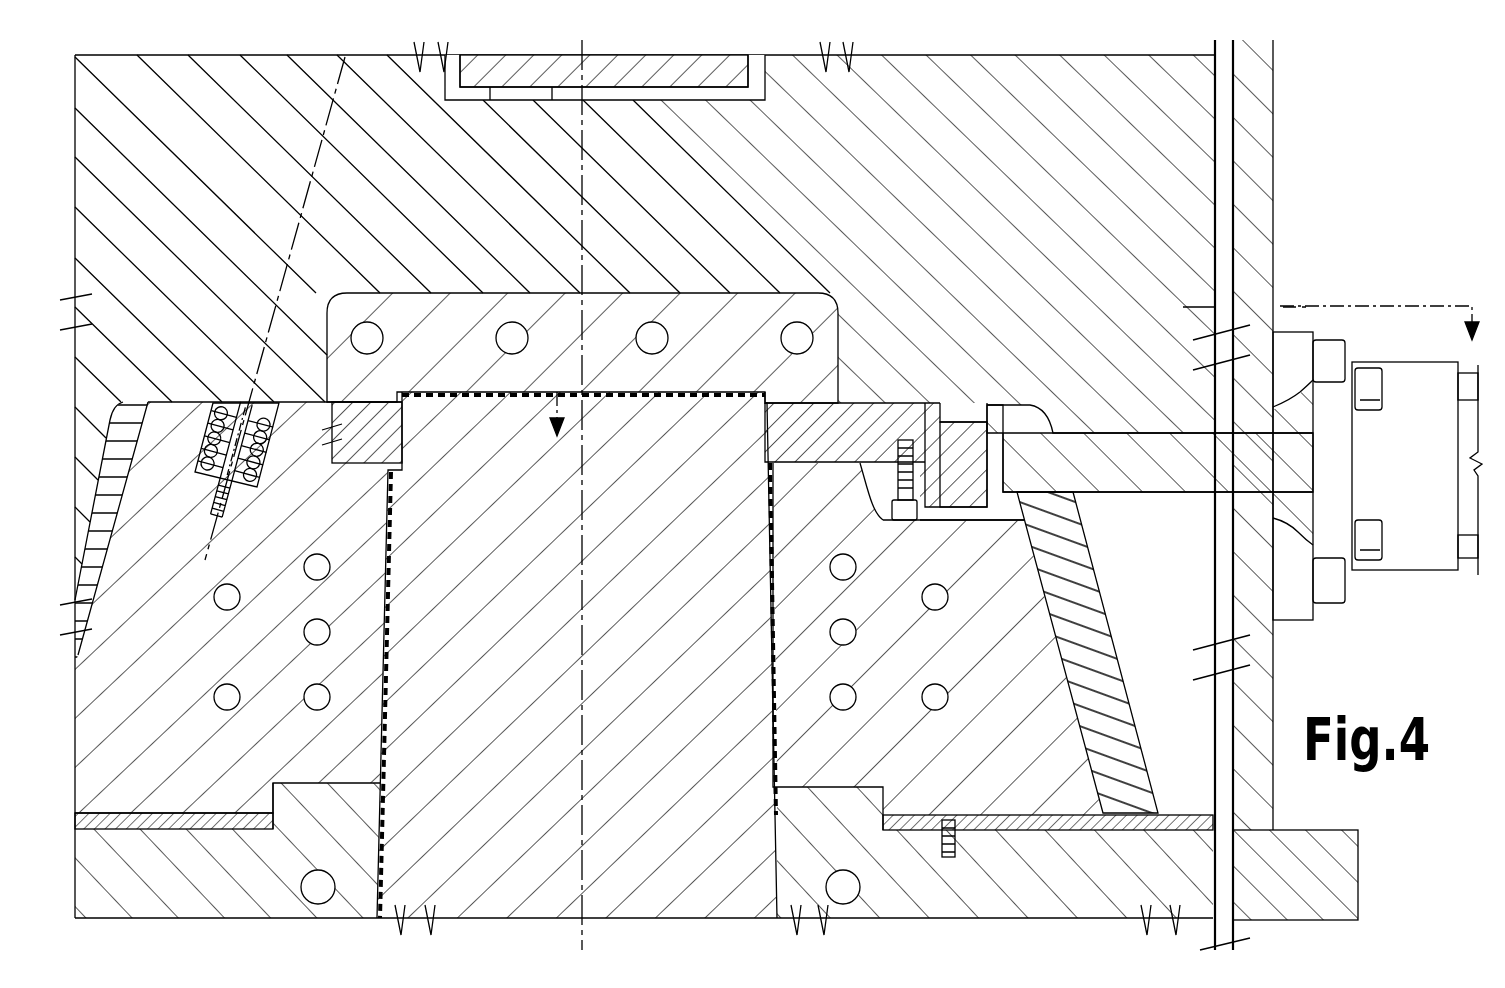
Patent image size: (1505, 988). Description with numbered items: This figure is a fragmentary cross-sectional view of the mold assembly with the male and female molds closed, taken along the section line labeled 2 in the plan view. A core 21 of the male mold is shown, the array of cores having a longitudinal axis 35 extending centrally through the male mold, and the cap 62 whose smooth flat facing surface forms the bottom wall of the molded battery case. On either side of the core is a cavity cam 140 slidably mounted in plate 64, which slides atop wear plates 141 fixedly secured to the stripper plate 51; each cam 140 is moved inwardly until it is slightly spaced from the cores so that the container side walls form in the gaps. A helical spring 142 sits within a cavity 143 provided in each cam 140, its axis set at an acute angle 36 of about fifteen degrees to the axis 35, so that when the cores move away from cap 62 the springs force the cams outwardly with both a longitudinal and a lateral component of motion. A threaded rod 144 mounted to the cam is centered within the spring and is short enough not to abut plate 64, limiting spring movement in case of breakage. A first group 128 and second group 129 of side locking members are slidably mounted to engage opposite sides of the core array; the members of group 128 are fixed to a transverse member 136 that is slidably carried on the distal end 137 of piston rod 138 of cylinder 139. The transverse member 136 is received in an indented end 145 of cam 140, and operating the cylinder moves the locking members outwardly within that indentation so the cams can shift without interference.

The plate 64 is at (259, 148).
The acute angle 36 is at (584, 228).
The longitudinal axis 35 is at (584, 197).
The cap 62 is at (836, 330).
The core 21 is at (592, 601).
The section line 2 is at (1001, 371).
The second group of side locking members 129 is at (360, 452).
The cavity cam 140 is at (257, 603).
The indented end 145 is at (866, 484).
The first group of side locking members 128 is at (880, 415).
The distal end of piston rod 137 is at (964, 426).
The transverse member 136 is at (958, 518).
The piston rod 138 is at (1075, 440).
The wear plates 141 is at (991, 822).
The stripper plate 51 is at (990, 880).
The cylinder 139 is at (1403, 373).
The helical springs 142 is at (228, 404).
The cavities 143 is at (279, 406).
The rod 144 is at (228, 519).